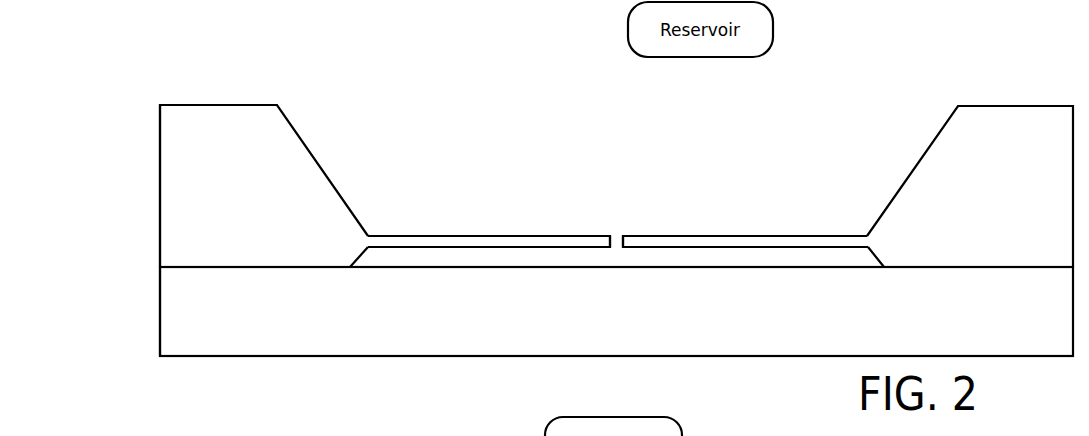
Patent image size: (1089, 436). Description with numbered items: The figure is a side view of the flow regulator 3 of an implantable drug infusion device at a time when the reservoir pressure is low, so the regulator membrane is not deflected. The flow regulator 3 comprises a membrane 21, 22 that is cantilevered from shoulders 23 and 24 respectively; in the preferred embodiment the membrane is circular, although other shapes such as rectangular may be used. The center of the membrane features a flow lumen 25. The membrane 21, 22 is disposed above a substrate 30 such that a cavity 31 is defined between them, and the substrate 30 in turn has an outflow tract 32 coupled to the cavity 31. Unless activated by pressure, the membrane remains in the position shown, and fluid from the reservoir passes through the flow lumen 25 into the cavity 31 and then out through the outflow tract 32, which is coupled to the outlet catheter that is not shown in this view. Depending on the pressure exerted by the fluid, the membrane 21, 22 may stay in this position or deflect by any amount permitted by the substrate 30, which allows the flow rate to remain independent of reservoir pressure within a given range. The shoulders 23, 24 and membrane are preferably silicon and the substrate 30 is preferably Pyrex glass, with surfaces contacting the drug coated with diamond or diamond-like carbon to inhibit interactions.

The flow regulator 3 is at (102, 167).
The membrane 21 is at (469, 243).
The membrane 22 is at (710, 243).
The shoulder 23 is at (269, 135).
The shoulder 24 is at (1005, 128).
The flow lumen 25 is at (622, 223).
The substrate 30 is at (427, 330).
The cavity 31 is at (559, 260).
The outflow tract 32 is at (710, 360).